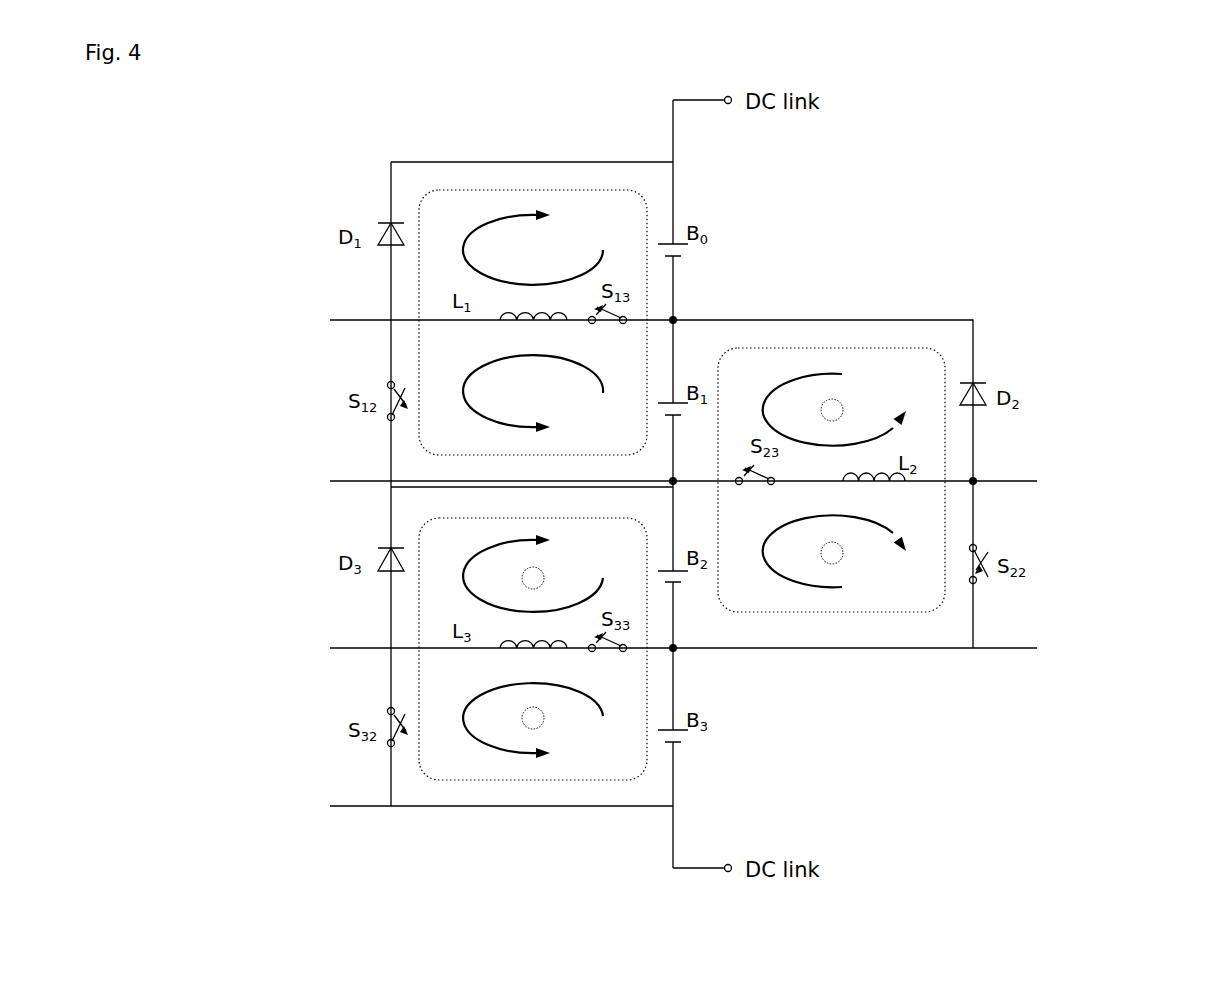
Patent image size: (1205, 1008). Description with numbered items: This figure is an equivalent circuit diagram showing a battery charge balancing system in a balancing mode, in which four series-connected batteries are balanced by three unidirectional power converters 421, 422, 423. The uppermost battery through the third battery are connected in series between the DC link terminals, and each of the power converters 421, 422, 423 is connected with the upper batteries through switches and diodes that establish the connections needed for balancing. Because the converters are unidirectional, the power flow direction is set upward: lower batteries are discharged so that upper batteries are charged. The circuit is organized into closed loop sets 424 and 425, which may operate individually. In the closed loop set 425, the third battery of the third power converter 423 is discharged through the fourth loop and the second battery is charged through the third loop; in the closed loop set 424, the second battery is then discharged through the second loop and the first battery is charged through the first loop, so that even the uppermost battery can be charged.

The first power converter 421 is at (320, 318).
The second power converter 422 is at (1057, 476).
The third power converter 423 is at (320, 645).
The closed loop set 424 is at (888, 346).
The closed loop set 425 is at (510, 782).